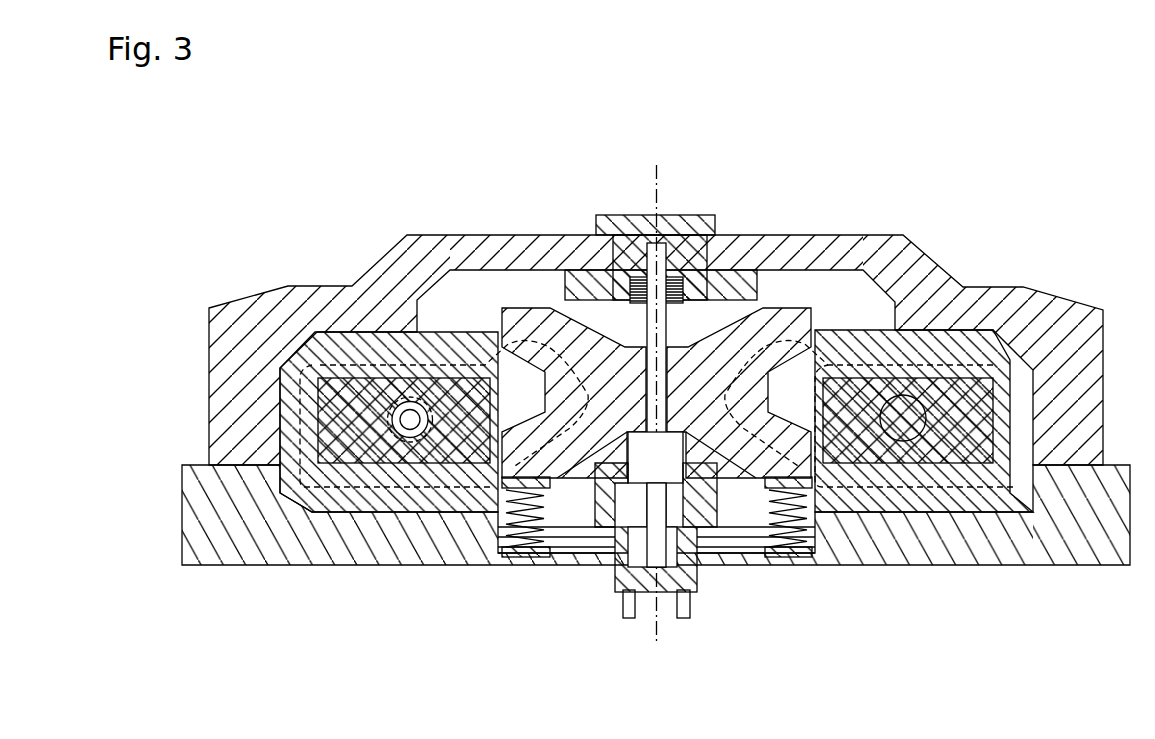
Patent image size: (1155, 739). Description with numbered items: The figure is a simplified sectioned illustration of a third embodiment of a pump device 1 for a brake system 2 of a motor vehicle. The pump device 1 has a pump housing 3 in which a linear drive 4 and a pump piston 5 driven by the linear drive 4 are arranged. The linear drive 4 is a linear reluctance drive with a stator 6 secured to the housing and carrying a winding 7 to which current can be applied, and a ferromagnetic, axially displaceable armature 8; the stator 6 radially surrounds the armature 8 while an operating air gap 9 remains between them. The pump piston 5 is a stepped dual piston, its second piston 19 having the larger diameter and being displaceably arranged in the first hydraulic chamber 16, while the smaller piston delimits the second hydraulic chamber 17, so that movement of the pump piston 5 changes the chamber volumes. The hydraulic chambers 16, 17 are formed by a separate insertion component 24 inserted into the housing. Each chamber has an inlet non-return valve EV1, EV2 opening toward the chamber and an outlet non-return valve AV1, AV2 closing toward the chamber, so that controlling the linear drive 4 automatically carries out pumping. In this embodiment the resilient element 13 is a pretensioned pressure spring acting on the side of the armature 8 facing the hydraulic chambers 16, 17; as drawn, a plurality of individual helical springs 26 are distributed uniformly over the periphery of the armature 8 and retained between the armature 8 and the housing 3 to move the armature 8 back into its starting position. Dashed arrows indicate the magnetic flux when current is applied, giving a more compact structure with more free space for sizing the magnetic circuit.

The pump device 1 is at (266, 180).
The brake system 2 is at (1052, 175).
The pump housing 3 is at (1063, 325).
The linear drive 4 is at (868, 303).
The pump piston 5 is at (668, 325).
The stator 6 is at (879, 486).
The winding 7 is at (906, 441).
The armature 8 is at (550, 306).
The operating air gap 9 is at (490, 302).
The resilient element 13 is at (502, 528).
The first hydraulic chamber 16 is at (688, 462).
The second hydraulic chamber 17 is at (653, 568).
The second piston 19 is at (592, 527).
The insertion component 24 is at (572, 618).
The individual helical springs 26 is at (520, 552).
The non-return valve EV1 is at (551, 530).
The non-return valve EV2 is at (603, 566).
The non-return valve AV1 is at (697, 566).
The non-return valve AV2 is at (687, 568).